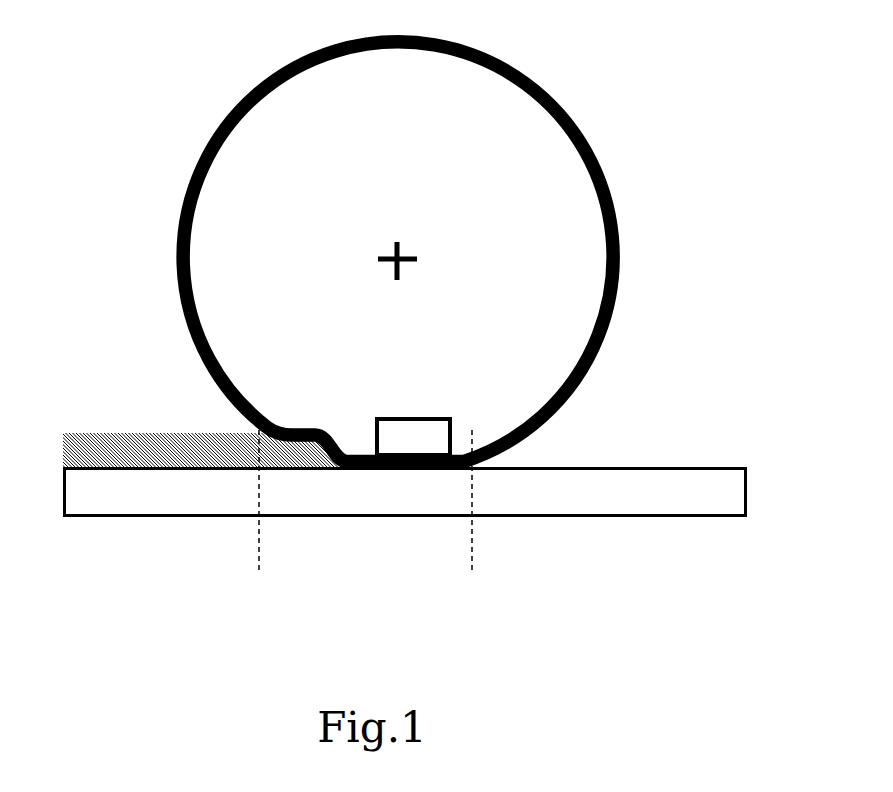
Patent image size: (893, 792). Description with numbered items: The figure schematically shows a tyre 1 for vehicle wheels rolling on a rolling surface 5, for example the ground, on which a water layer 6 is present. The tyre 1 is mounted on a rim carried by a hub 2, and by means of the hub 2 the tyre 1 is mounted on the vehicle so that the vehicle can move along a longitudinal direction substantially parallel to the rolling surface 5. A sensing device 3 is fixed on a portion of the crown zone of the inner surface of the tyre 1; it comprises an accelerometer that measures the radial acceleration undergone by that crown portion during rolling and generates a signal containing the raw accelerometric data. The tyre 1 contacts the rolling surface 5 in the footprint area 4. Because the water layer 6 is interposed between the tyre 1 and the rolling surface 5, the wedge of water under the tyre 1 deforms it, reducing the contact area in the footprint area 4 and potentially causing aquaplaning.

The tyre 1 is at (223, 118).
The hub 2 is at (417, 258).
The sensing device 3 is at (403, 438).
The footprint area 4 is at (262, 573).
The rolling surface 5 is at (597, 467).
The water layer 6 is at (192, 448).